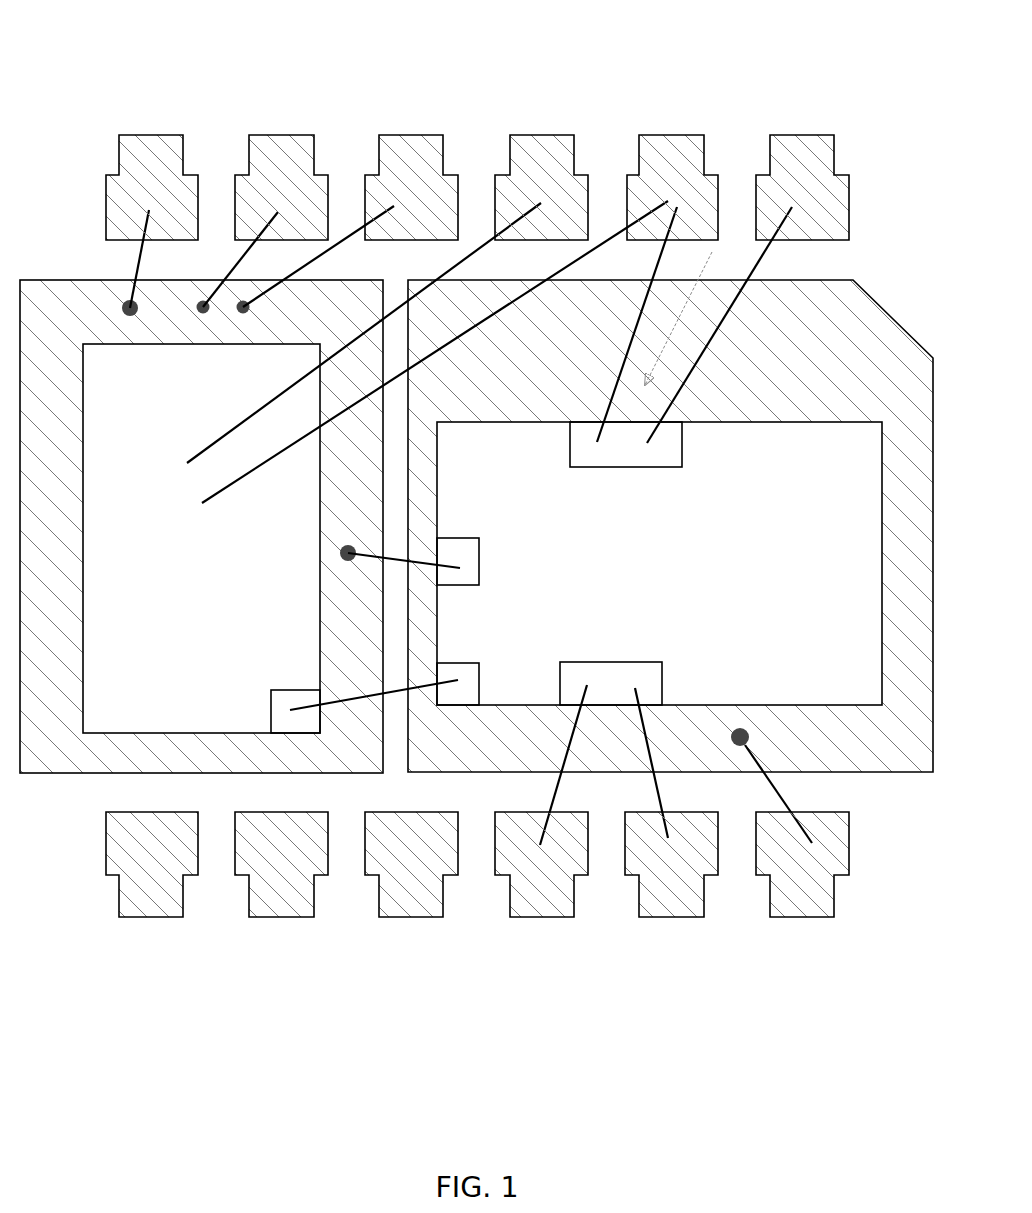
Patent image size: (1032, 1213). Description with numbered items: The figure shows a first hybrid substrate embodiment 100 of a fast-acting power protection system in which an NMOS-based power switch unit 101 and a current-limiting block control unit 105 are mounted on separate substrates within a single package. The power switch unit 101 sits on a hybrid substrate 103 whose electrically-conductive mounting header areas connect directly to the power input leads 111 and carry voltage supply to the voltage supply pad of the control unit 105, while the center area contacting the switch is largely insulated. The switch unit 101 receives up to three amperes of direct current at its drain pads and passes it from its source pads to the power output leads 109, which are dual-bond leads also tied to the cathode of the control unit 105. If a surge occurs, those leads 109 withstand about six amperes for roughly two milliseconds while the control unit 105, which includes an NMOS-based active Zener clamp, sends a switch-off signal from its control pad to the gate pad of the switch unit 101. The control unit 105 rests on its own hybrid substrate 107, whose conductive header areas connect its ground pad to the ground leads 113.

The first hybrid substrate embodiment 100 is at (450, 1122).
The NMOS-based power switch unit 101 is at (201, 538).
The hybrid substrate 103 is at (201, 526).
The current-limiting block control unit 105 is at (659, 563).
The hybrid substrate 107 is at (670, 512).
The power output leads 109 is at (803, 123).
The power input leads 111 is at (407, 122).
The ground leads 113 is at (805, 925).